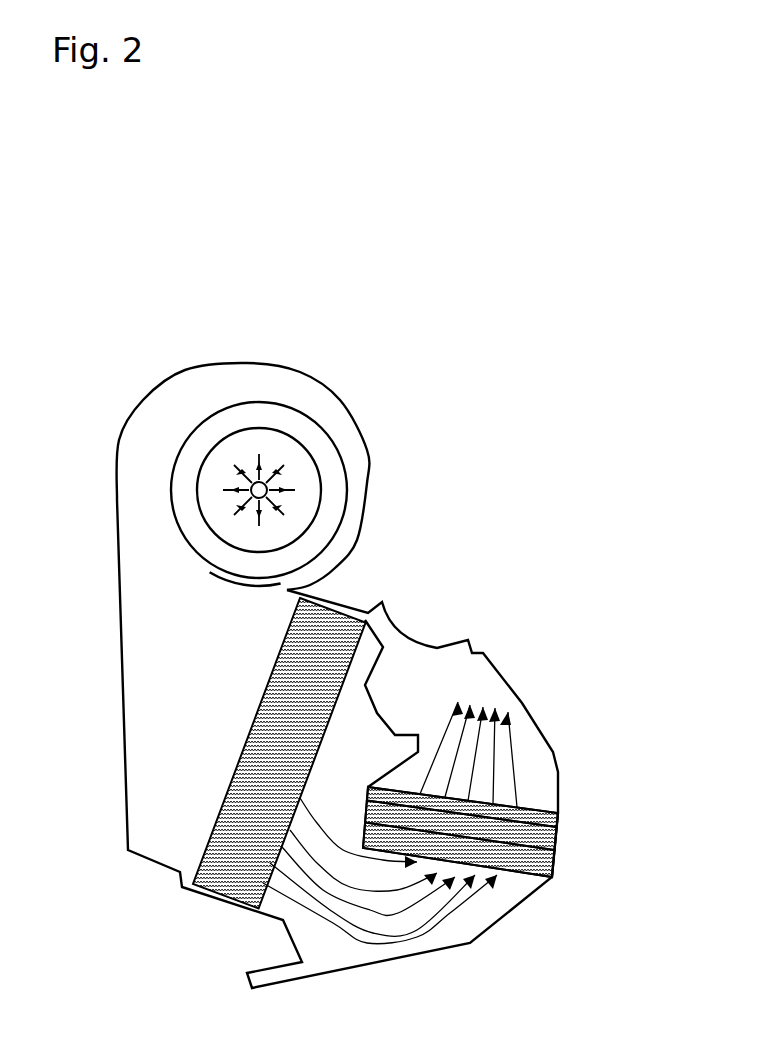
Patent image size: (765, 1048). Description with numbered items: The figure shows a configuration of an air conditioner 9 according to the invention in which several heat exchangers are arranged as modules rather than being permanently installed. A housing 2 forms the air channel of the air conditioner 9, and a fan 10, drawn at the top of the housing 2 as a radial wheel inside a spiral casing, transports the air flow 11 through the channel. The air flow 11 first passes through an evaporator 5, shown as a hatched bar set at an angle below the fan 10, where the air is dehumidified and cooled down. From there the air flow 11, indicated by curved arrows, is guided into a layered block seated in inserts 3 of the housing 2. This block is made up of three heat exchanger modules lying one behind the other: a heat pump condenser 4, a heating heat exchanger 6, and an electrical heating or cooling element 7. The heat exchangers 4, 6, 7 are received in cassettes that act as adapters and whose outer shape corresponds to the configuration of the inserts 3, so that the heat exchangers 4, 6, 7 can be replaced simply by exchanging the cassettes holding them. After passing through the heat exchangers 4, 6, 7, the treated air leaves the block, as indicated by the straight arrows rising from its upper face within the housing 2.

The housing 2 is at (558, 772).
The inserts 3 is at (370, 818).
The heat pump condenser 4 is at (528, 863).
The evaporator 5 is at (218, 876).
The heating heat exchanger 6 is at (530, 830).
The electrical heating or cooling element 7 is at (547, 818).
The air conditioner 9 is at (321, 322).
The fan 10 is at (268, 482).
The air flow 11 is at (398, 913).